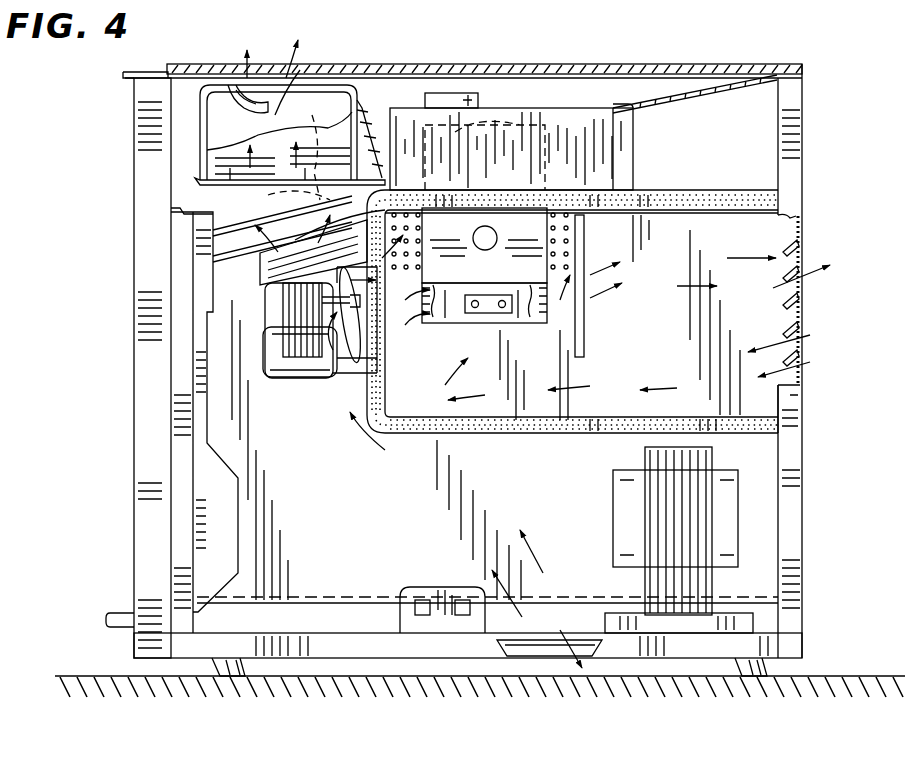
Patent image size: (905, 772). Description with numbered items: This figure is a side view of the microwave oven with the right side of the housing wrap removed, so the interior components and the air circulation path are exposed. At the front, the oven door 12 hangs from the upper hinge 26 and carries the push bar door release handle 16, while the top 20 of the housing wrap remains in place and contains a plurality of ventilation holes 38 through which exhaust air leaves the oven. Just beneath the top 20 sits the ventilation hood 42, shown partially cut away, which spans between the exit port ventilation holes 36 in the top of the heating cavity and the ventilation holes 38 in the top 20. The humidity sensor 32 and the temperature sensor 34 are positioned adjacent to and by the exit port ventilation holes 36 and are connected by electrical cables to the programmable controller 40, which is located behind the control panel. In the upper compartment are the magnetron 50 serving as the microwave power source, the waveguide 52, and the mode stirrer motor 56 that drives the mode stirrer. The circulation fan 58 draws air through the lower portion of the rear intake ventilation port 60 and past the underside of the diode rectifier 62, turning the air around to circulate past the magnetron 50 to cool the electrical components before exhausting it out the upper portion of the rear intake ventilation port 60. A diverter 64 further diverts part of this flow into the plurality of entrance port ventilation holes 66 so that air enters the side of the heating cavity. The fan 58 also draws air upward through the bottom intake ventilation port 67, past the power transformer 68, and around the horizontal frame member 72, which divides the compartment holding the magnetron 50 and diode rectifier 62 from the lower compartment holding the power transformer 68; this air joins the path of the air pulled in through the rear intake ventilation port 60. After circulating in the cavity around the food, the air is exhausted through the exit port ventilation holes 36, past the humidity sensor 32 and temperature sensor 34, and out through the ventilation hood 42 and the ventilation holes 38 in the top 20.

The oven door 12 is at (170, 318).
The push bar door release handle 16 is at (128, 613).
The top of housing wrap cover 20 is at (760, 68).
The upper hinge 26 is at (123, 74).
The humidity sensor 32 is at (299, 226).
The temperature sensor 34 is at (285, 148).
The exit port ventilation holes 36 is at (171, 211).
The ventilation holes in housing wrap top 38 is at (234, 84).
The programmable controller 40 is at (213, 273).
The ventilation hood 42 is at (358, 88).
The magnetron 50 is at (471, 235).
The waveguide 52 is at (600, 152).
The mode stirrer motor 56 is at (478, 100).
The circulation fan 58 is at (318, 372).
The rear intake ventilation port 60 is at (803, 306).
The diode rectifier 62 is at (462, 323).
The diverter 64 is at (586, 298).
The entrance port ventilation holes 66 is at (400, 218).
The bottom intake ventilation port 67 is at (548, 656).
The power transformer 68 is at (728, 503).
The horizontal frame member 72 is at (527, 433).